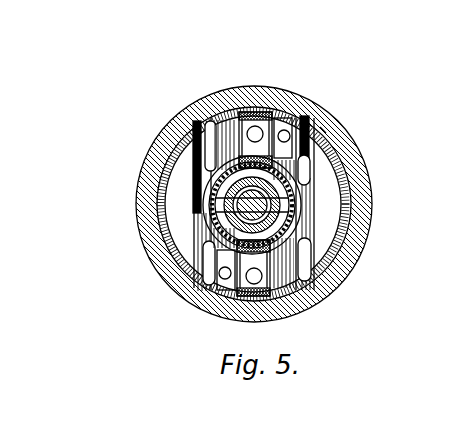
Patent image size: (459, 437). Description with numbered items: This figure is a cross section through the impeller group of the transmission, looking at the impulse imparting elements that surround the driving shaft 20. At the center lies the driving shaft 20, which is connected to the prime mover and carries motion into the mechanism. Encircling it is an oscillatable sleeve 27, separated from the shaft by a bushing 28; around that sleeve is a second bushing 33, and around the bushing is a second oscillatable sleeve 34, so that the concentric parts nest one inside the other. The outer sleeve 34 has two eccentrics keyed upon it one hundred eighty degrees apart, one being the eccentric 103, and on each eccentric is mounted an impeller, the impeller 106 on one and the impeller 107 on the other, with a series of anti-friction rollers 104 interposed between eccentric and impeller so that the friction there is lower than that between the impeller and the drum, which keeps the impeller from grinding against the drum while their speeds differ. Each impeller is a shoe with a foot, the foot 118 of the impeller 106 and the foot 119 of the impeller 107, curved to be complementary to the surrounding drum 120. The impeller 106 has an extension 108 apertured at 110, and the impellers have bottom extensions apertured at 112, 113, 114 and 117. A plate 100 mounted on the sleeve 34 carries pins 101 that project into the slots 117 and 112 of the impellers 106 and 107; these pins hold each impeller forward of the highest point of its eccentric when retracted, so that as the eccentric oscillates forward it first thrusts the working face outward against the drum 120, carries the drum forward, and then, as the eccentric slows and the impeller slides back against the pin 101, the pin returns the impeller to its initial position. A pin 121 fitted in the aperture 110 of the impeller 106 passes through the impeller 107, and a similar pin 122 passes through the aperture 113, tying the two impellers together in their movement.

The driving shaft 20 is at (295, 172).
The oscillatable sleeve 27 is at (210, 200).
The bushing 28 is at (212, 234).
The bushing 33 is at (205, 182).
The oscillatable sleeve 34 is at (210, 165).
The plate 100 is at (330, 150).
The pin 101 is at (290, 128).
The eccentric 103 is at (458, 142).
The rollers 104 is at (300, 192).
The impeller 106 is at (336, 250).
The impeller 107 is at (195, 148).
The extension 108 is at (265, 108).
The aperture 110 is at (242, 118).
The aperture 112 is at (210, 287).
The aperture 113 is at (225, 290).
The aperture 114 is at (318, 292).
The aperture 117 is at (313, 122).
The foot 118 is at (252, 312).
The foot 119 is at (200, 103).
The drum 120 is at (336, 132).
The pin 121 is at (253, 108).
The pin 122 is at (288, 307).